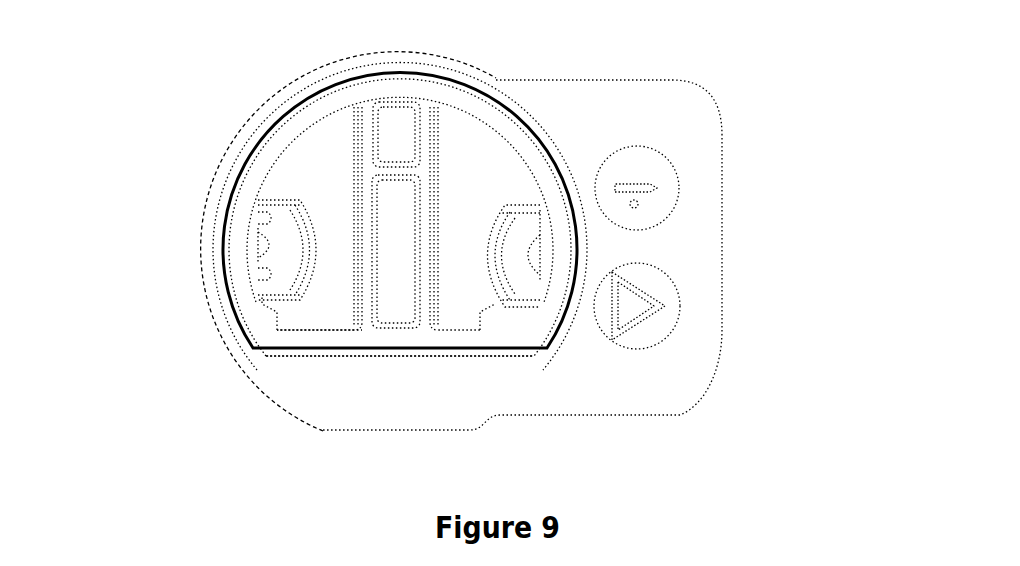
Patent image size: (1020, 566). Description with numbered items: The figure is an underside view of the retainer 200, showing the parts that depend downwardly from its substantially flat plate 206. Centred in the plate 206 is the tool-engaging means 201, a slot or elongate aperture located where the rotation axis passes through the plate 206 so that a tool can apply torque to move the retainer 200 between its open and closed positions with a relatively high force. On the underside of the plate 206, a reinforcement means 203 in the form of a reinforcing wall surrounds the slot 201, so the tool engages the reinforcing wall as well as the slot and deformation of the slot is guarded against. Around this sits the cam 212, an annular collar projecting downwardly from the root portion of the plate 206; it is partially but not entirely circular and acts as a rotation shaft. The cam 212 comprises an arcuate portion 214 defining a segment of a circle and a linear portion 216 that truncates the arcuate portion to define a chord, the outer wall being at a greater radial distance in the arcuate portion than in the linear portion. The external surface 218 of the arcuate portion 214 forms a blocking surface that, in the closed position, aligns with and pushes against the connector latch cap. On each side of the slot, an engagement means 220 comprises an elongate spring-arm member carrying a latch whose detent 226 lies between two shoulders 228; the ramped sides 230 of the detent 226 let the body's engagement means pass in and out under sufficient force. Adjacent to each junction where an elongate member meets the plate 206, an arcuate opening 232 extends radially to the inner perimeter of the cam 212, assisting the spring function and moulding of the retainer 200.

The retainer 200 is at (127, 54).
The tool-engaging means 201 is at (398, 300).
The reinforcement means 203 is at (430, 208).
The plate 206 is at (563, 83).
The cam 212 is at (535, 165).
The arcuate portion 214 is at (370, 88).
The linear portion 216 is at (312, 338).
The external surface 218 is at (443, 80).
The engagement means 220 is at (292, 220).
The detent 226 is at (267, 248).
The shoulders 228 is at (262, 222).
The sides of the detent 230 is at (532, 237).
The arcuate opening 232 is at (260, 305).